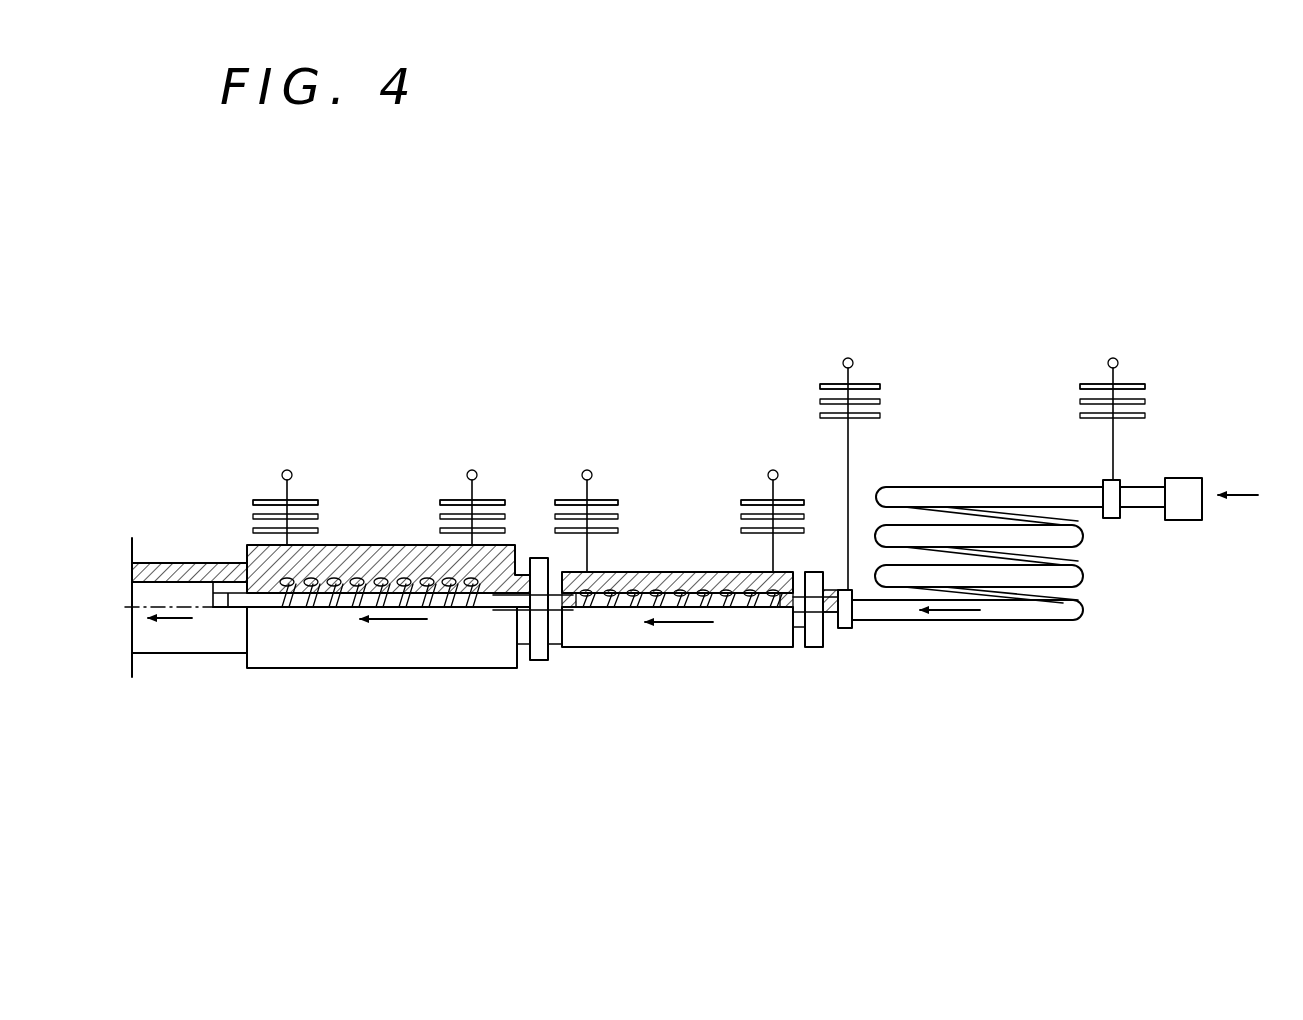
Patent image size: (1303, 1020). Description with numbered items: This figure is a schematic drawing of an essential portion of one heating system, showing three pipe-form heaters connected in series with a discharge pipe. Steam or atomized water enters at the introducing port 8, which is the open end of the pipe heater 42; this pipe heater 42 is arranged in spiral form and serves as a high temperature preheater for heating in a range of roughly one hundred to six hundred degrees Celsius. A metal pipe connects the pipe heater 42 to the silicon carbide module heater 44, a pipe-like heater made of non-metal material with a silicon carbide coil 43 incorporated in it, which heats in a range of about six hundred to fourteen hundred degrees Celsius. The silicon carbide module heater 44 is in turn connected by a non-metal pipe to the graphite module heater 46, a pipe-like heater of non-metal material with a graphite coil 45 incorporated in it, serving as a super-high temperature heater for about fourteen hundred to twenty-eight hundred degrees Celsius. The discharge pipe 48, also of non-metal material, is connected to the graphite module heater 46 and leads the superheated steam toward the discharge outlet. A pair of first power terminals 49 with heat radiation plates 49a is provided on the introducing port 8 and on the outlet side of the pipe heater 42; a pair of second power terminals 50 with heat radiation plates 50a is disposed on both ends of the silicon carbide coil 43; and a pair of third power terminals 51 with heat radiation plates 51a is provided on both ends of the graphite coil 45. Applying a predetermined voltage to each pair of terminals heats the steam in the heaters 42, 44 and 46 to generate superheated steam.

The introducing port 8 is at (1236, 475).
The pipe heater 42 is at (996, 640).
The silicon carbide coil 43 is at (607, 607).
The silicon carbide module heater 44 is at (670, 660).
The graphite coil 45 is at (430, 607).
The graphite module heater 46 is at (333, 676).
The discharge pipe 48 is at (182, 668).
The first power terminal 49 is at (849, 358).
The heat radiation plate 49a is at (876, 385).
The second power terminal 50 is at (587, 470).
The heat radiation plate 50a is at (740, 500).
The third power terminal 51 is at (287, 470).
The heat radiation plate 51a is at (440, 500).